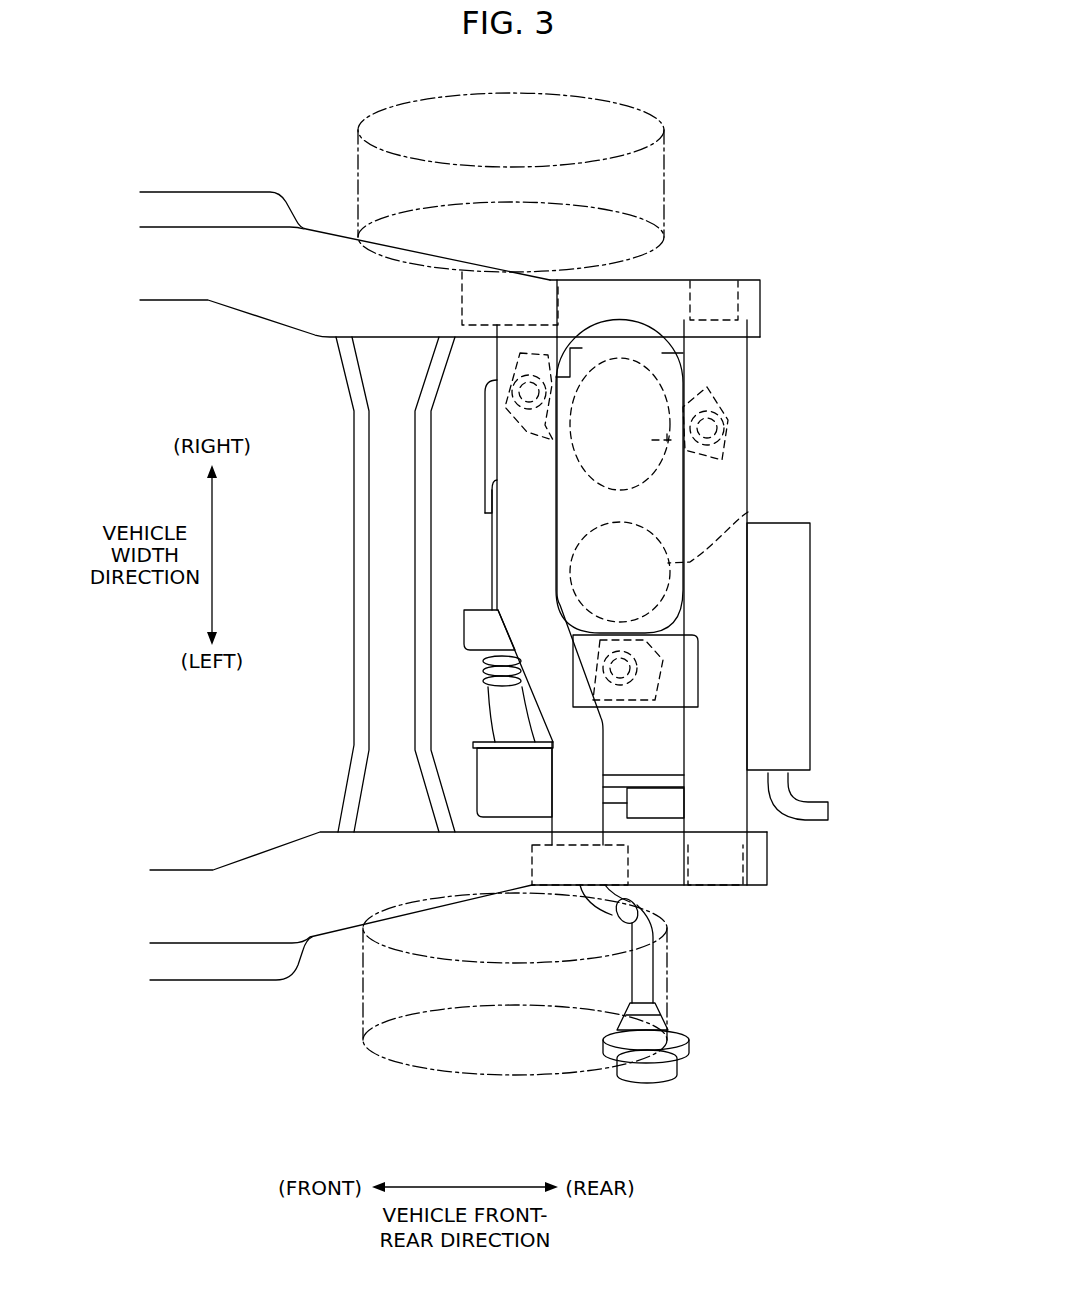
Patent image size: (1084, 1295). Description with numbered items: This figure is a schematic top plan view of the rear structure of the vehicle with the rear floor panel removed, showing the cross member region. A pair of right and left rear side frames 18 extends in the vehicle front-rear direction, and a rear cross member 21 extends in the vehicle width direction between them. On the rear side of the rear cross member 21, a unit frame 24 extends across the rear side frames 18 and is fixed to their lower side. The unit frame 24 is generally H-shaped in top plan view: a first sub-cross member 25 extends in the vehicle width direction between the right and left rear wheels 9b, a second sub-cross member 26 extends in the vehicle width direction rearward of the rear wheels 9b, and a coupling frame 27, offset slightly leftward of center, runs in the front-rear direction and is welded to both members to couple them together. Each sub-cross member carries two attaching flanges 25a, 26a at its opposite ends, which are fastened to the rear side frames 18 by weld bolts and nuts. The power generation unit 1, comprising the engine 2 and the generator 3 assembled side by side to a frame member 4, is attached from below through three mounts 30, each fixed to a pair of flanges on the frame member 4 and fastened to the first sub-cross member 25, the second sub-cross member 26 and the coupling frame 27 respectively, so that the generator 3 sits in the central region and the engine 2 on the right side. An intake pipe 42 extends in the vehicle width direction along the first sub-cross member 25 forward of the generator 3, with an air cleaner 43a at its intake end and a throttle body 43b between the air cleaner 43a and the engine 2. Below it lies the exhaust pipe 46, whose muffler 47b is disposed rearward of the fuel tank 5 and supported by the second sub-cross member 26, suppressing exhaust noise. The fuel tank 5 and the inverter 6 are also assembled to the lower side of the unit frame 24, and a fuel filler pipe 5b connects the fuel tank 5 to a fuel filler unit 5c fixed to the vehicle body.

The power generation unit 1 is at (668, 479).
The engine 2 is at (745, 458).
The generator 3 is at (748, 512).
The frame member 4 is at (570, 502).
The fuel tank 5 is at (663, 753).
The fuel filler pipe 5b is at (645, 963).
The fuel filler unit 5c is at (687, 1060).
The inverter 6 is at (668, 828).
The rear wheel 9b is at (600, 108).
The rear side frame 18 is at (193, 290).
The rear cross member 21 is at (358, 568).
The unit frame 24 is at (740, 357).
The first sub-cross member 25 is at (503, 365).
The attaching flange 25a is at (537, 292).
The second sub-cross member 26 is at (727, 381).
The attaching flange 26a is at (712, 295).
The coupling frame 27 is at (642, 697).
The mount 30 is at (503, 410).
The intake pipe 42 is at (419, 689).
The air cleaner 43a is at (493, 756).
The throttle body 43b is at (478, 620).
The exhaust pipe 46 is at (839, 671).
The muffler 47b is at (795, 602).